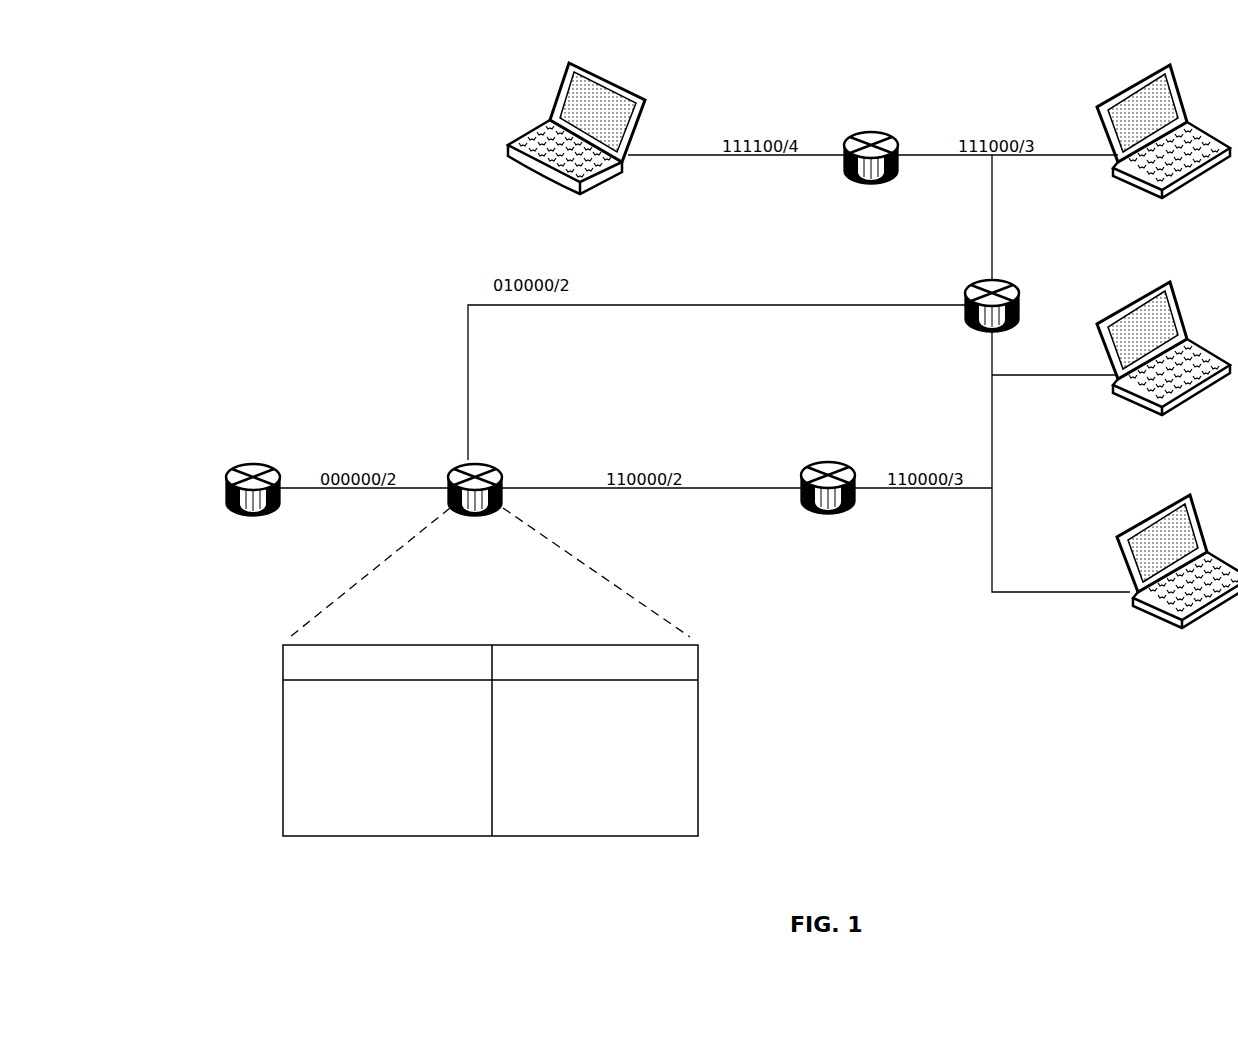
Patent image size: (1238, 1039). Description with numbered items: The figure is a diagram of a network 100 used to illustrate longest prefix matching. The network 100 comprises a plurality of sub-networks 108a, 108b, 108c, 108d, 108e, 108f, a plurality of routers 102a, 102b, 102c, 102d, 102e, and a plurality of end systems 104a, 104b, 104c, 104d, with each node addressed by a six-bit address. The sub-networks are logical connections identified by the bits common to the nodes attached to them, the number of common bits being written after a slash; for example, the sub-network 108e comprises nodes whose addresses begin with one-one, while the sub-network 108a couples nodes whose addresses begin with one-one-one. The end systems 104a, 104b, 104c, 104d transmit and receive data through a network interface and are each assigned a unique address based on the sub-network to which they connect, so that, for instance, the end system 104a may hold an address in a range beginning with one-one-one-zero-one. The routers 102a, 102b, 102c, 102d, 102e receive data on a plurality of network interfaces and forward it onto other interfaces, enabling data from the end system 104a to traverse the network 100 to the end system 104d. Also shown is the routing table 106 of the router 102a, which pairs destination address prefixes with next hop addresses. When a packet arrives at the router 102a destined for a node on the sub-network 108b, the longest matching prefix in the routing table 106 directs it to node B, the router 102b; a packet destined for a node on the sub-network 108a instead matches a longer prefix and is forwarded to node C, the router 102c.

The network 100 is at (266, 88).
The router 102a is at (458, 463).
The router 102b is at (812, 462).
The router 102c is at (978, 282).
The router 102d is at (236, 465).
The router 102e is at (855, 132).
The end system 104a is at (572, 63).
The end system 104b is at (1115, 93).
The end system 104c is at (1120, 308).
The end system 104d is at (1158, 514).
The routing table 106 is at (283, 730).
The sub-network 108a is at (662, 156).
The sub-network 108b is at (992, 200).
The sub-network 108c is at (672, 305).
The sub-network 108d is at (1025, 592).
The sub-network 108e is at (713, 490).
The sub-network 108f is at (308, 490).